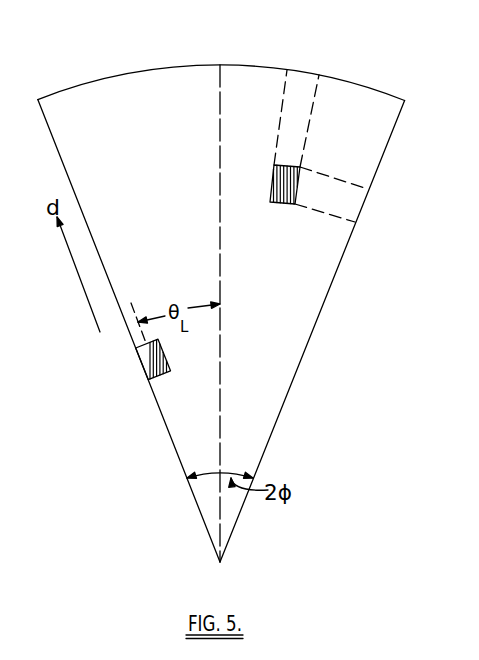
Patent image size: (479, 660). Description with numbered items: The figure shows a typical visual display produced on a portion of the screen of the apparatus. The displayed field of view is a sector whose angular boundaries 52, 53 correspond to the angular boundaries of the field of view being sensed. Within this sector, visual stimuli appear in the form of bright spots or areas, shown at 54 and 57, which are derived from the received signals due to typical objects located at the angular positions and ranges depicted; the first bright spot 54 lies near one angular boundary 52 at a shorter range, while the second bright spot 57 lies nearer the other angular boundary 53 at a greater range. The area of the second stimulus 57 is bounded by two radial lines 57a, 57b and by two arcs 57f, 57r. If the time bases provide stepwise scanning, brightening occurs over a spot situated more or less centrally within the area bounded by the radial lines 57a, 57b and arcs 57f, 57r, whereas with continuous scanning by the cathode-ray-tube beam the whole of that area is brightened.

The angular boundary 52 is at (160, 412).
The angular boundary 53 is at (278, 420).
The bright spot 54 is at (138, 360).
The bright spot 57 is at (303, 166).
The radial line 57a is at (285, 89).
The radial line 57b is at (313, 95).
The arc 57r is at (368, 189).
The arc 57f is at (355, 222).